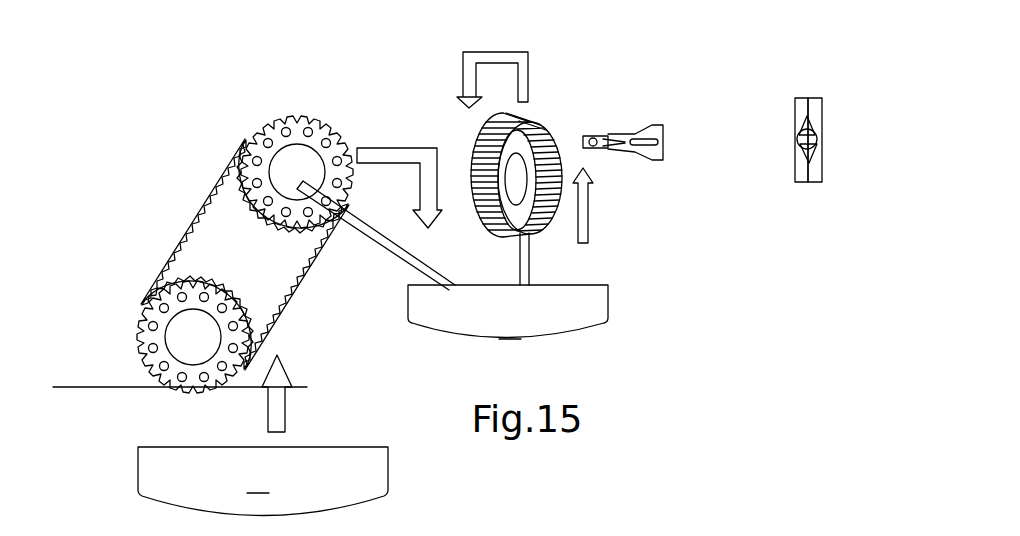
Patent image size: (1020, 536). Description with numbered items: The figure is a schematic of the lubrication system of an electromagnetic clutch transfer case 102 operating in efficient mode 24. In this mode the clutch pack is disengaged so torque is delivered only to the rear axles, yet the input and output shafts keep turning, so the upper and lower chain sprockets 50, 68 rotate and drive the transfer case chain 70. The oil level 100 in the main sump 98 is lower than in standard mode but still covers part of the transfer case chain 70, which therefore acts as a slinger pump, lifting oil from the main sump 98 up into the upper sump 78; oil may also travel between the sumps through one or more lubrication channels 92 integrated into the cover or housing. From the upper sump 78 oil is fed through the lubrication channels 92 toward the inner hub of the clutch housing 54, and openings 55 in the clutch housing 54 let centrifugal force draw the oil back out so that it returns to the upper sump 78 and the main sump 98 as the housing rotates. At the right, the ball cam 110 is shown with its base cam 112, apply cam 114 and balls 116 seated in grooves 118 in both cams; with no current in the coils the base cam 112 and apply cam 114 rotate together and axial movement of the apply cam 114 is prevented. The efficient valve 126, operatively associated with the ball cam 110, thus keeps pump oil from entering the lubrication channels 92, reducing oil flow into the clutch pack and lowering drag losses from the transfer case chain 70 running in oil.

The efficient mode 24 is at (735, 72).
The upper chain sprocket 50 is at (288, 130).
The clutch housing 54 is at (520, 160).
The openings 55 is at (487, 212).
The lower chain sprocket 68 is at (177, 293).
The transfer case chain 70 is at (213, 192).
The upper sump 78 is at (508, 313).
The lubrication channels 92 is at (395, 252).
The main sump 98 is at (263, 481).
The oil level 100 is at (107, 387).
The electromagnetic clutch transfer case 102 is at (727, 43).
The ball cam 110 is at (815, 146).
The base cam 112 is at (817, 177).
The apply cam 114 is at (798, 167).
The balls 116 is at (815, 138).
The grooves 118 is at (807, 122).
The efficient valve 126 is at (663, 152).